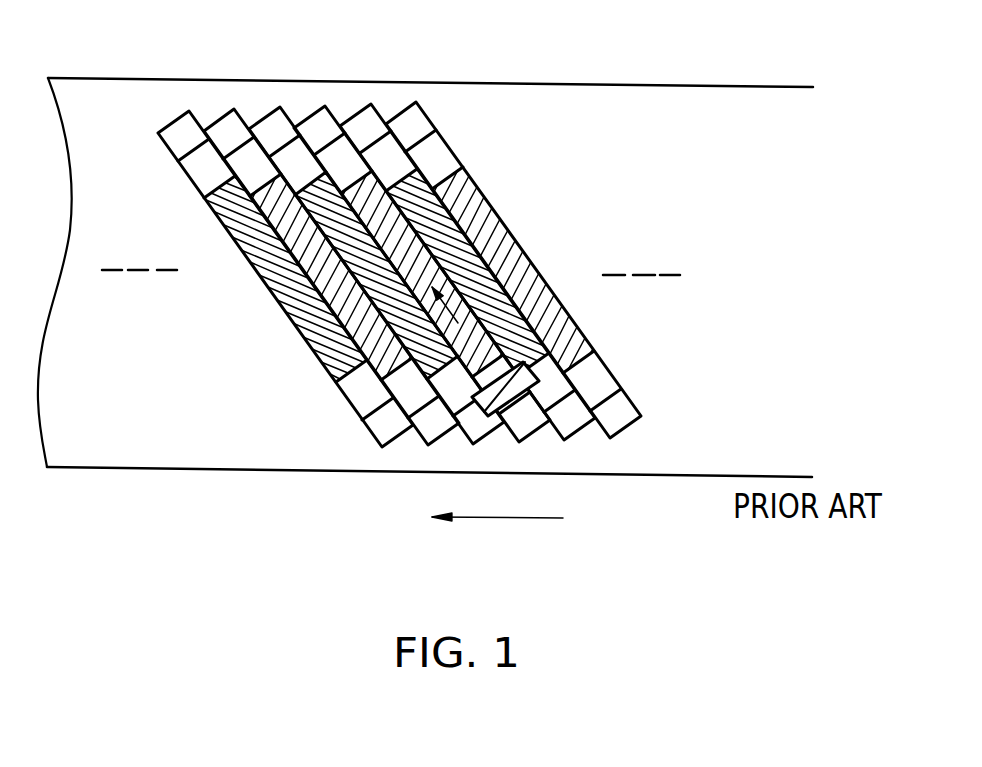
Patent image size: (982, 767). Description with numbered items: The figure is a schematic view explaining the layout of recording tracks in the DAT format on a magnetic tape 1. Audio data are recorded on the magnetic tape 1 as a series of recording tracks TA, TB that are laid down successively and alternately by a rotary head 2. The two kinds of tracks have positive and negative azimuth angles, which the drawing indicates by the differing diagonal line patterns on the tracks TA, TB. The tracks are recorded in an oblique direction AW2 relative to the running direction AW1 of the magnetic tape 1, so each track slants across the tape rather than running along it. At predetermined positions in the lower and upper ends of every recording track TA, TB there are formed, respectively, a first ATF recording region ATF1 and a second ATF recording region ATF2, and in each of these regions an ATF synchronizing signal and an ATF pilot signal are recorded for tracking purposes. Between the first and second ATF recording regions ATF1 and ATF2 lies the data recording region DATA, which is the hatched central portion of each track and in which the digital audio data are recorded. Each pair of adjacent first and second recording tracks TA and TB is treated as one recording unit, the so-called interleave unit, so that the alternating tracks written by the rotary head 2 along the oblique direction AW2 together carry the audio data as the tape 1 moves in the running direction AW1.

The magnetic tape 1 is at (553, 82).
The rotary head 2 is at (530, 363).
The recording track TA is at (219, 120).
The recording track TB is at (177, 122).
The first ATF recording region ATF1 is at (600, 386).
The second ATF recording region ATF2 is at (440, 163).
The data recording region DATA is at (523, 263).
The running direction AW1 is at (522, 517).
The oblique direction AW2 is at (458, 323).